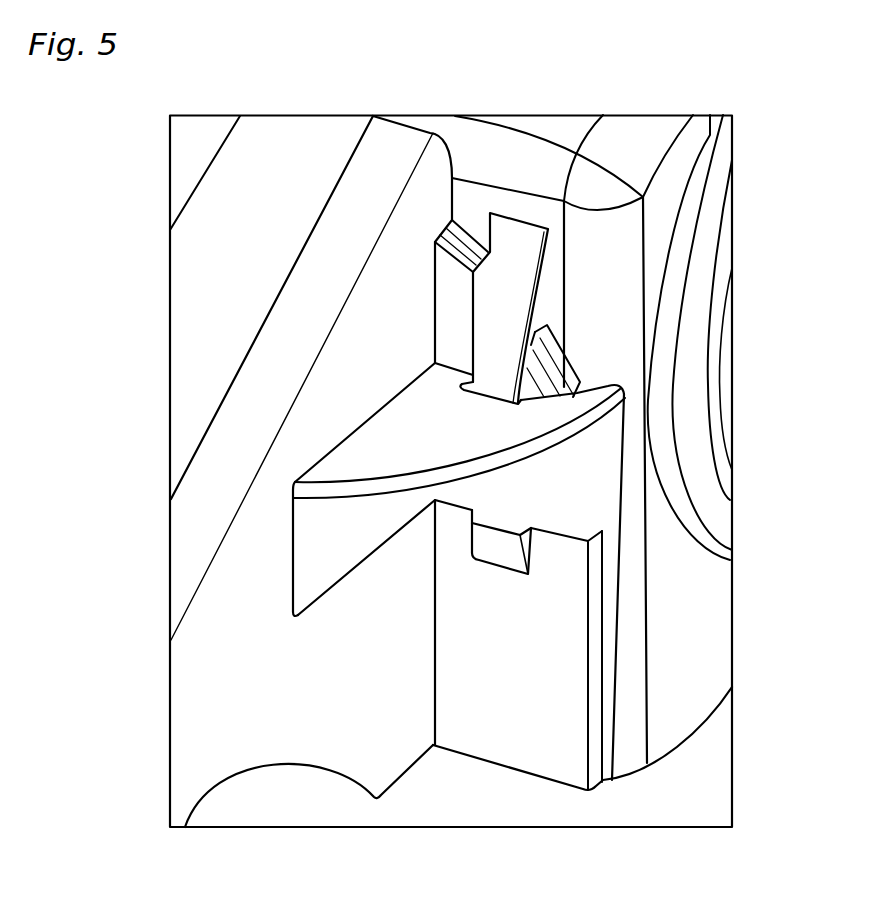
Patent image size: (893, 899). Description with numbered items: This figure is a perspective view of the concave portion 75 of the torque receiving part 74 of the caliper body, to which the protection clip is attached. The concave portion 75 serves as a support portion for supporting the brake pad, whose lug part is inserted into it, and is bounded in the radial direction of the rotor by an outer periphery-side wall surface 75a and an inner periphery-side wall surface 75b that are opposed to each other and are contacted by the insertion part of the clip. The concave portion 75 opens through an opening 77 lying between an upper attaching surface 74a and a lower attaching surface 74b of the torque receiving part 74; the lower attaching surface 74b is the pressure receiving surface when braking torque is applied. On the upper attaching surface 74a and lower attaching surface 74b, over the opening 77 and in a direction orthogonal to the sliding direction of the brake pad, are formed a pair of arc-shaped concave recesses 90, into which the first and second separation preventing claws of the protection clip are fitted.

The torque receiving part 74 is at (267, 723).
The upper attaching surface 74a is at (453, 303).
The lower attaching surface 74b is at (490, 690).
The concave portion 75 is at (335, 542).
The outer periphery-side wall surface 75a is at (412, 422).
The inner periphery-side wall surface 75b is at (353, 565).
The opening 77 is at (532, 482).
The concave recesses 90 is at (520, 243).